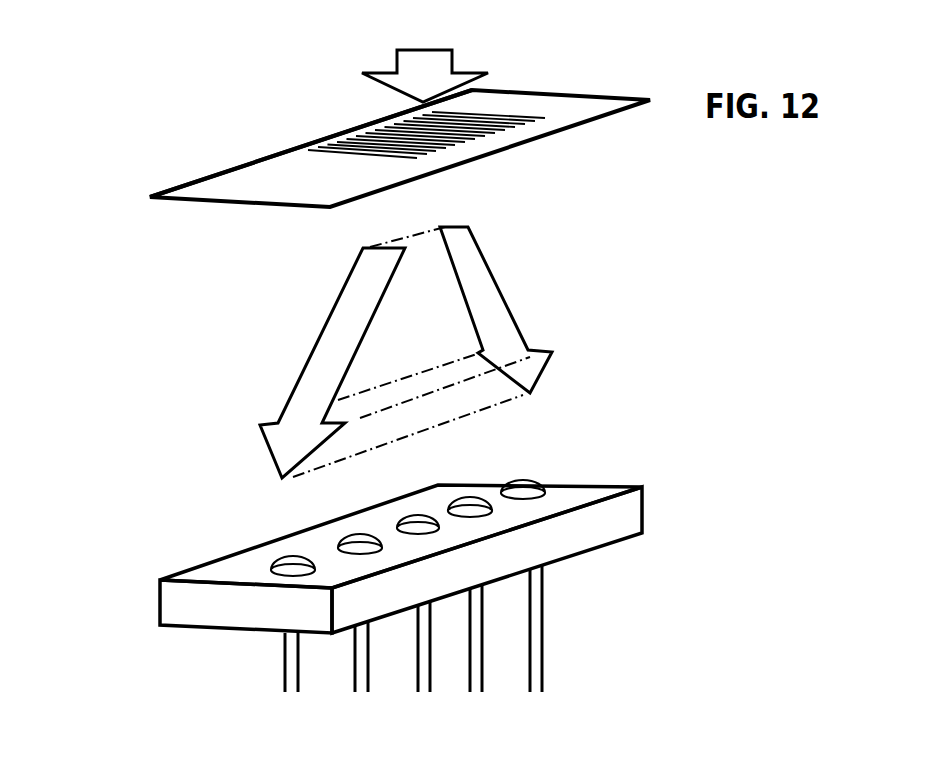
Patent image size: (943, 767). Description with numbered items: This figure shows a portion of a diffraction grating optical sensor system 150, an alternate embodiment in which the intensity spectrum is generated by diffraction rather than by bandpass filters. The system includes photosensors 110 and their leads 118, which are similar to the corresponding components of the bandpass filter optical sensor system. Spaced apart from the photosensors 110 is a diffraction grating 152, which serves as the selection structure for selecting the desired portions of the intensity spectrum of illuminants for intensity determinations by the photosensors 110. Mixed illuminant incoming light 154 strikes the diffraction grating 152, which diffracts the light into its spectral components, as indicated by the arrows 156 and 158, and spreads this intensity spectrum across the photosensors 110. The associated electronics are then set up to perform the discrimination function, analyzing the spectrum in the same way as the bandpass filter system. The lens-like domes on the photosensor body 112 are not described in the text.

The diffraction grating optical sensor system 150 is at (155, 140).
The diffraction grating 152 is at (598, 117).
The incoming light 154 is at (443, 82).
The arrow 156 is at (323, 338).
The arrow 158 is at (508, 298).
The photosensors 110 is at (600, 462).
The lenses 112 is at (637, 518).
The leads 118 is at (597, 640).